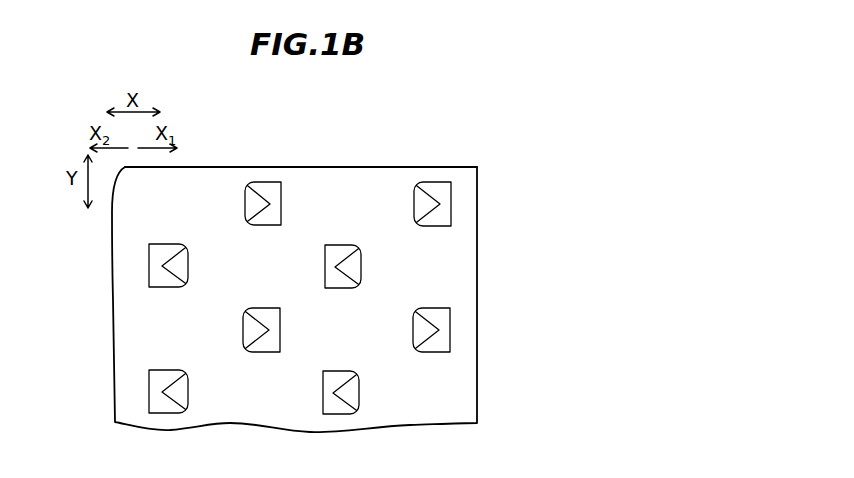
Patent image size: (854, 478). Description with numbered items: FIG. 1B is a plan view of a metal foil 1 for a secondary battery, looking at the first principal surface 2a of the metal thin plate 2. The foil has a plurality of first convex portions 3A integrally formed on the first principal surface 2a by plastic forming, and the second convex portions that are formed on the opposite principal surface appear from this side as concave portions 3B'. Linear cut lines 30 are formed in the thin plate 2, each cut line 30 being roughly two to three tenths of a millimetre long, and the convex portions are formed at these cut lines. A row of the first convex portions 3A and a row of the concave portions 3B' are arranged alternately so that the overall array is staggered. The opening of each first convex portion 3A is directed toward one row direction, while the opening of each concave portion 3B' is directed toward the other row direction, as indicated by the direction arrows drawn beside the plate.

The metal foil 1 is at (540, 149).
The metal thin plate 2 is at (492, 207).
The first principal surface 2a is at (225, 172).
The first convex portion 3A is at (490, 312).
The concave portion 3B' is at (220, 338).
The cut line 30 is at (450, 213).